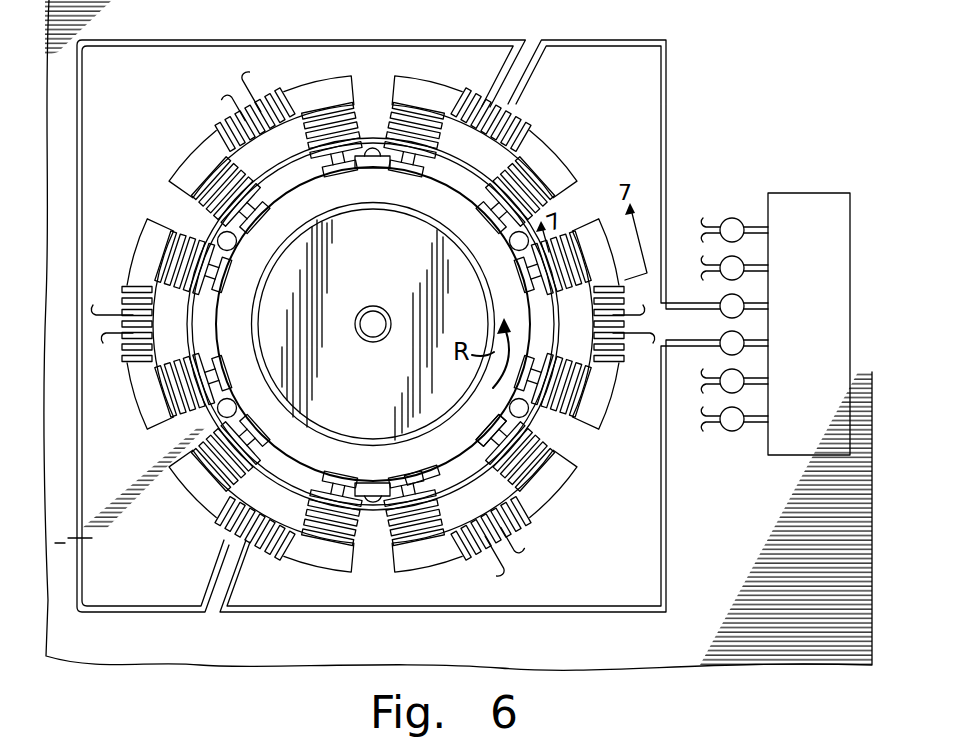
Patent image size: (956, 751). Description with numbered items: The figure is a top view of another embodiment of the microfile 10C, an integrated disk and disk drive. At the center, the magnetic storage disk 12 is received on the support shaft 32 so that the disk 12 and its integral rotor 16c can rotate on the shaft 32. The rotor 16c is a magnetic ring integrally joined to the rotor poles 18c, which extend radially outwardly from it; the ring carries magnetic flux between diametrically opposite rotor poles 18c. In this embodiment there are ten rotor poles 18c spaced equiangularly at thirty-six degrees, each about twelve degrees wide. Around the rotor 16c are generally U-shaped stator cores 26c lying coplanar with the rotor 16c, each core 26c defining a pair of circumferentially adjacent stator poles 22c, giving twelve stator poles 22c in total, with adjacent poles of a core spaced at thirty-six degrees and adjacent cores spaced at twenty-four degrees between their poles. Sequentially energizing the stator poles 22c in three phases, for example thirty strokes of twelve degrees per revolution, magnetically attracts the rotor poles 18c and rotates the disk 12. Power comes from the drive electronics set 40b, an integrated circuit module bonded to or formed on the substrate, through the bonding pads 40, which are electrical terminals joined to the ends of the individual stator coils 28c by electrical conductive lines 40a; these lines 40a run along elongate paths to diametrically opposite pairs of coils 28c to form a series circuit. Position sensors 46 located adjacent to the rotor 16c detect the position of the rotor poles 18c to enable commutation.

The microfile 10C is at (130, 169).
The magnetic storage disk 12 is at (388, 248).
The rotor 16c is at (332, 441).
The rotor poles 18c is at (372, 536).
The stator poles 22c is at (474, 452).
The stator core 26c is at (570, 349).
The stator coils 28c is at (470, 519).
The support shaft 32 is at (372, 320).
The bonding pads 40 is at (744, 310).
The electrical conductive lines 40a is at (411, 326).
The drive electronics set 40b is at (809, 324).
The position sensors 46 is at (219, 236).